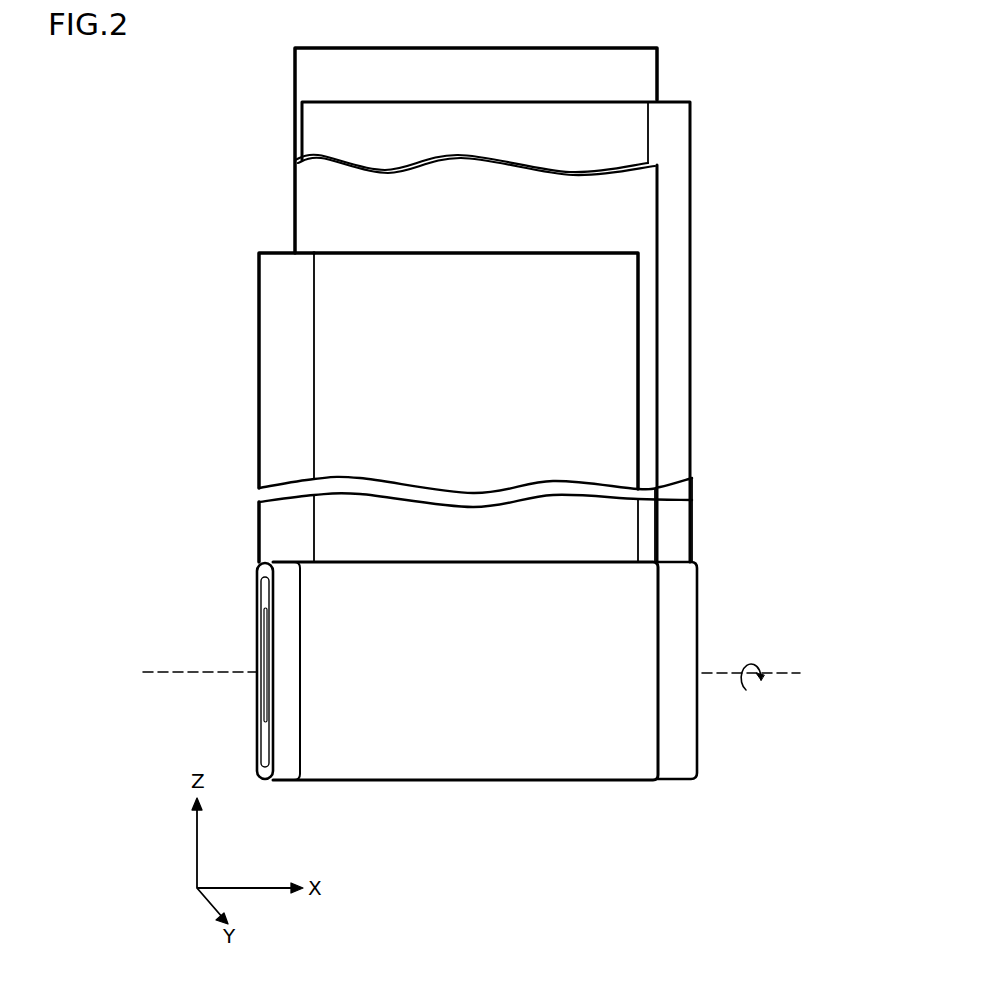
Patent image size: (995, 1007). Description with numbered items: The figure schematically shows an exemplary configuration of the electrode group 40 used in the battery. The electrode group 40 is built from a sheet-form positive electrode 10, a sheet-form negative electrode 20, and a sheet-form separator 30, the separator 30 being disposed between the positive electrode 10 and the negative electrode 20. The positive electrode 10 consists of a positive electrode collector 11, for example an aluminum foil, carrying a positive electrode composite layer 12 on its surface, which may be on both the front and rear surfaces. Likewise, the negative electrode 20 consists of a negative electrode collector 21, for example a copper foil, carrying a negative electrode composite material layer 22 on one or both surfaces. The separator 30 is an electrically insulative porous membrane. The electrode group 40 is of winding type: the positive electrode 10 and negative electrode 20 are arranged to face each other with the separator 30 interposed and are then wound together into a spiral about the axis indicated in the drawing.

The positive electrode 10 is at (412, 407).
The positive electrode collector 11 is at (303, 378).
The positive electrode composite layer 12 is at (350, 430).
The negative electrode 20 is at (575, 332).
The negative electrode collector 21 is at (677, 200).
The negative electrode composite material layer 22 is at (625, 125).
The separator 30 is at (653, 61).
The electrode group 40 is at (503, 682).